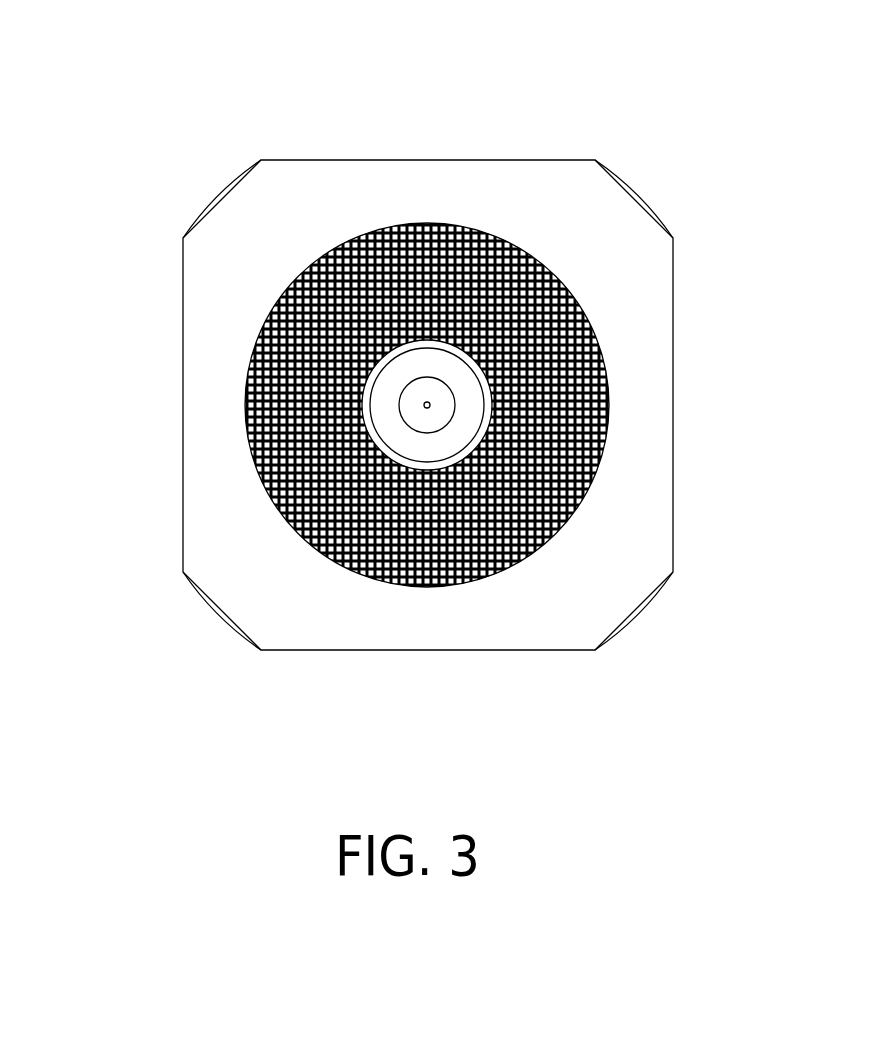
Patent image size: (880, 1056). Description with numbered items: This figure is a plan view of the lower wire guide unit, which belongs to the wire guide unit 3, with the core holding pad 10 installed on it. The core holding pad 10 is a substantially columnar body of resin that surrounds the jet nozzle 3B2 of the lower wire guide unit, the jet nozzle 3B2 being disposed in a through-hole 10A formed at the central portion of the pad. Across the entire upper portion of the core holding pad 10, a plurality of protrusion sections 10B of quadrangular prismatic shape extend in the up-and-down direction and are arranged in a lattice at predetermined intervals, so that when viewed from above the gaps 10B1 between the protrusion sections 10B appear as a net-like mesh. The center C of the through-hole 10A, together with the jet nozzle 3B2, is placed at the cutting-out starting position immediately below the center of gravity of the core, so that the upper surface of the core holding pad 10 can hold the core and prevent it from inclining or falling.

The core holding pad 10 is at (555, 263).
The through-hole 10A is at (493, 413).
The protrusion sections 10B is at (495, 240).
The gaps 10B1 is at (565, 527).
The wire guide unit 3 is at (212, 478).
The jet nozzle 3B2 is at (401, 367).
The center of the through-hole C is at (427, 408).